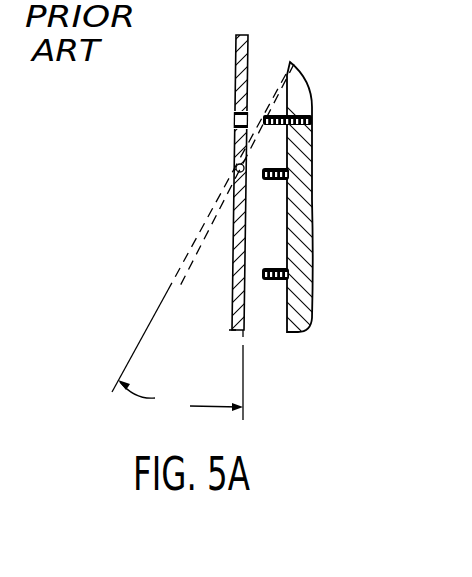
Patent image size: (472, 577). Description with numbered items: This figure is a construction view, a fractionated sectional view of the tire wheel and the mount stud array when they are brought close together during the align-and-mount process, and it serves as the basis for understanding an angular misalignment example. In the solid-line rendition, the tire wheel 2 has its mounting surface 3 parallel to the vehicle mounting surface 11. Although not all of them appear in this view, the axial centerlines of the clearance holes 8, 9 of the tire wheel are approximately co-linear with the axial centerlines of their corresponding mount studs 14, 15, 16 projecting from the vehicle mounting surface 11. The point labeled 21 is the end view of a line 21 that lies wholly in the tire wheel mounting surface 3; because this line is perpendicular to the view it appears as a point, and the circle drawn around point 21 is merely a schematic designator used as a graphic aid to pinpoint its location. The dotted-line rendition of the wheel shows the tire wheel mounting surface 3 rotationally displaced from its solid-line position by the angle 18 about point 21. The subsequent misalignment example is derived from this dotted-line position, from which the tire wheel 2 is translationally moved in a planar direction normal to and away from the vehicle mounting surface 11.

The tire wheel 2 is at (247, 36).
The tire wheel mounting surface 3 is at (245, 308).
The clearance hole 8 is at (233, 272).
The clearance hole 9 is at (237, 120).
The vehicle mounting surface 11 is at (287, 212).
The mount stud 14 is at (288, 273).
The mount stud 15 is at (290, 173).
The mount stud 16 is at (303, 113).
The angle 18 is at (180, 398).
The line (point) 21 is at (236, 168).